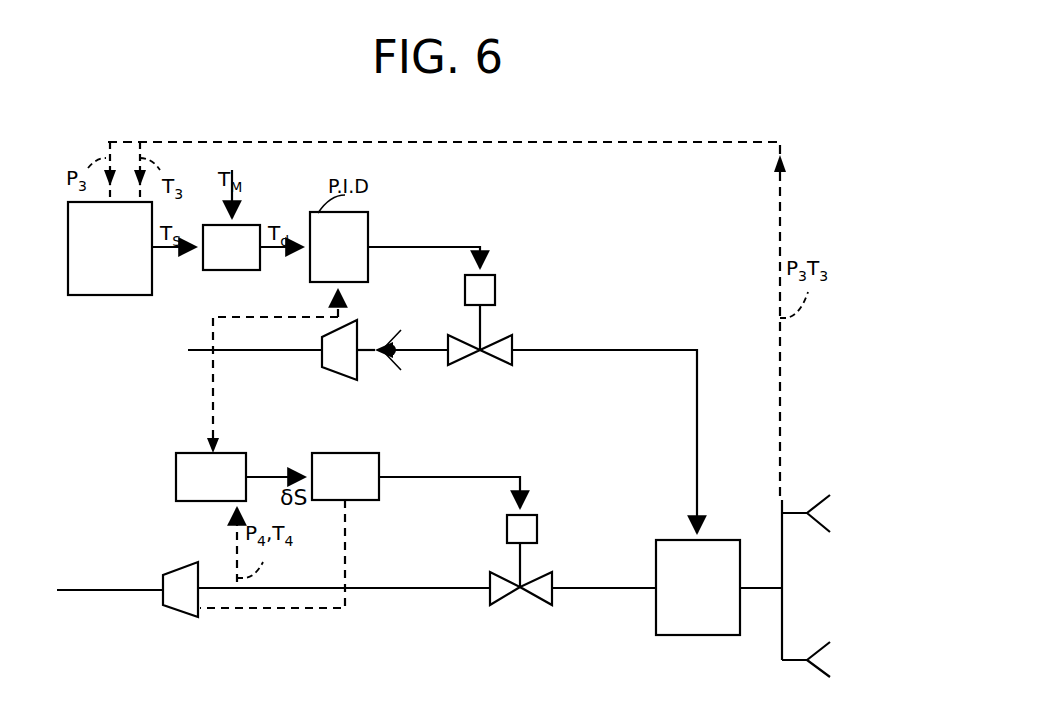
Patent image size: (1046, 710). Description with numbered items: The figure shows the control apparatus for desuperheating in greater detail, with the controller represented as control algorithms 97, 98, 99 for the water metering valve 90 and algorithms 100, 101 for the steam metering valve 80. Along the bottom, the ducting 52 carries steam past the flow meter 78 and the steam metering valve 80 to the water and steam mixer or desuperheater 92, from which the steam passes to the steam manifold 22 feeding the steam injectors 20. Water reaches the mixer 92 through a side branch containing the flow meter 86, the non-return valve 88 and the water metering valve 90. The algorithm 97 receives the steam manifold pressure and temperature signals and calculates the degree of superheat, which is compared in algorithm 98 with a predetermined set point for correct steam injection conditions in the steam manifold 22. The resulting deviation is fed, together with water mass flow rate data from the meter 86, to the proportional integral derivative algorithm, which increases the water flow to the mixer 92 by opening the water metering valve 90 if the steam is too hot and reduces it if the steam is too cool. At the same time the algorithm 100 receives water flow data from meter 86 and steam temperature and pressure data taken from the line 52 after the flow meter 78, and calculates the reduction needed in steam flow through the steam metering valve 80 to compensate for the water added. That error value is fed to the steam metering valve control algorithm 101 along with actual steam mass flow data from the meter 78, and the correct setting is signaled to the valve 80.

The control algorithm 97 is at (122, 262).
The control algorithm 98 is at (243, 262).
The control algorithm 99 is at (351, 262).
The water metering valve 90 is at (496, 290).
The flow meter 86 is at (347, 368).
The non-return valve 88 is at (394, 353).
The algorithm 100 is at (228, 491).
The steam metering valve control algorithm 101 is at (362, 491).
The steam metering valve 80 is at (538, 530).
The ducting 52 is at (594, 590).
The water and steam mixer or desuperheater 92 is at (710, 602).
The flow meter 78 is at (187, 605).
The steam injector 20 is at (830, 518).
The steam manifold 22 is at (782, 630).